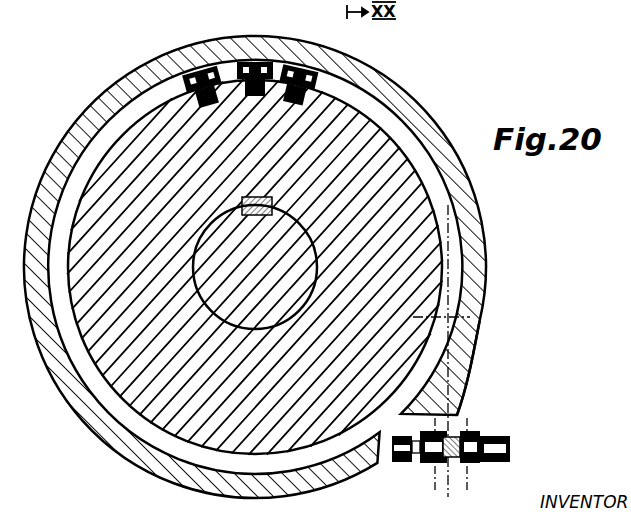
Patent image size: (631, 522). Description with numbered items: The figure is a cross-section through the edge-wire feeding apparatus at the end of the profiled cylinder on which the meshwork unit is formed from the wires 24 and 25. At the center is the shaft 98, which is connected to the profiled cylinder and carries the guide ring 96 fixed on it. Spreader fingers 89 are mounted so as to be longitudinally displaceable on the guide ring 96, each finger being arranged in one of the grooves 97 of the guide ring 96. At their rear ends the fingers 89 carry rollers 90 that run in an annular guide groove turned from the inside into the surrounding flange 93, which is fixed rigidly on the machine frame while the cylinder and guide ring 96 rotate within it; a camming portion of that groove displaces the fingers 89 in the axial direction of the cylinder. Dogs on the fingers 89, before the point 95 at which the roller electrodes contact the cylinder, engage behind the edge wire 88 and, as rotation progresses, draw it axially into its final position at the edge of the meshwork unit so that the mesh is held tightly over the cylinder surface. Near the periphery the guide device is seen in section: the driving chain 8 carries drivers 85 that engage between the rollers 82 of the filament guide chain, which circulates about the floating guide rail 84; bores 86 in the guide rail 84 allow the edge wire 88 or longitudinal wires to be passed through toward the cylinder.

The driving chain 8 is at (506, 445).
The wire 24 is at (437, 421).
The wire 25 is at (462, 377).
The roller 82 is at (487, 460).
The guide rail 84 is at (460, 461).
The driver 85 is at (480, 437).
The bore 86 is at (440, 465).
The edge wire 88 is at (452, 393).
The spreader finger 89 is at (254, 62).
The roller 90 is at (233, 62).
The flange 93 is at (344, 63).
The point 95 is at (455, 320).
The guide ring 96 is at (350, 117).
The groove 97 is at (278, 62).
The shaft 98 is at (241, 314).